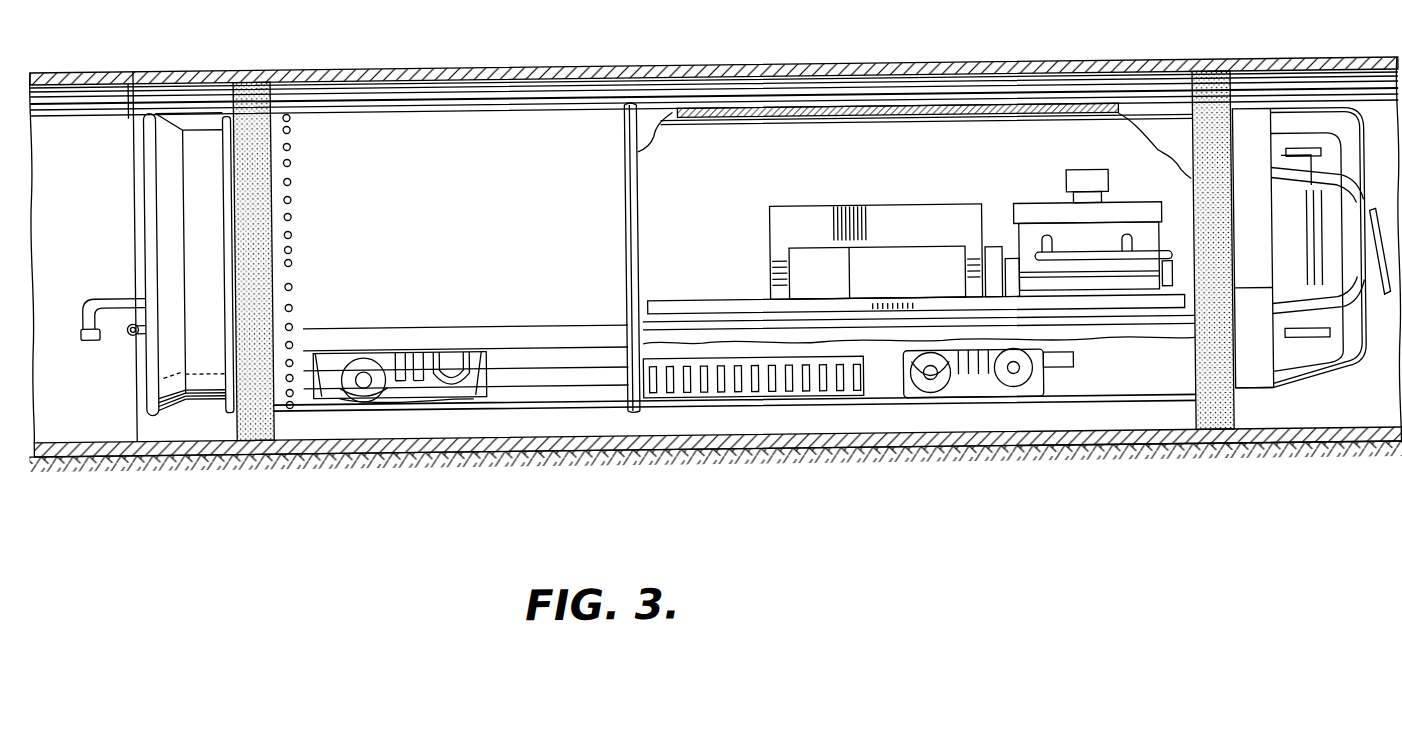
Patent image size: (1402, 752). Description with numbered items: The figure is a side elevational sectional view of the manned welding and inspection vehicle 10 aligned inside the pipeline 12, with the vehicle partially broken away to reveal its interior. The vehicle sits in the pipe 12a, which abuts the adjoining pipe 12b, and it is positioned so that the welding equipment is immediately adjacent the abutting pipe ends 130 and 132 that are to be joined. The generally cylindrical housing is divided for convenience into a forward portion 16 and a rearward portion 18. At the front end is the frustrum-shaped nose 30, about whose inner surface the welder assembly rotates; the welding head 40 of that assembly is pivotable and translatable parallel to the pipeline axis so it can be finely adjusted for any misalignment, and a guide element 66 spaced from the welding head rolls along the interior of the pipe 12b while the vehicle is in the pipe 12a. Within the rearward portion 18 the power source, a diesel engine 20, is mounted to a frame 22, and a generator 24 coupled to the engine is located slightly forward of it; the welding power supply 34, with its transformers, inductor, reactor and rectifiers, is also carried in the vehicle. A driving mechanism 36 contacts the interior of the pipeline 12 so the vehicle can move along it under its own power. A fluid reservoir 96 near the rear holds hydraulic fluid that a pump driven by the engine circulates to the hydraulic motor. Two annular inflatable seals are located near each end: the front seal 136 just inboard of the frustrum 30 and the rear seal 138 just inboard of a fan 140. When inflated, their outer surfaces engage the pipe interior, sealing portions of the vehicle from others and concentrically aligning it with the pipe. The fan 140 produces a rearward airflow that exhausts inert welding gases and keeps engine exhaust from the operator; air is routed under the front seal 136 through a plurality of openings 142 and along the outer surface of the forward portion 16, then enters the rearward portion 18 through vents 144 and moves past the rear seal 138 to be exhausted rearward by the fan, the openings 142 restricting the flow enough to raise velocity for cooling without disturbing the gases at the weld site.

The manned welding and inspection vehicle 10 is at (1286, 410).
The pipeline 12 is at (810, 82).
The pipe 12a is at (178, 459).
The pipe 12b is at (70, 458).
The forward portion 16 is at (515, 143).
The rearward portion 18 is at (985, 124).
The diesel engine 20 is at (1040, 218).
The frame 22 is at (1110, 316).
The generator 24 is at (893, 272).
The frustrum-shaped nose 30 is at (165, 137).
The welding power supply 34 is at (805, 225).
The driving mechanism 36 is at (360, 402).
The welding head 40 is at (126, 336).
The guide element 66 is at (98, 299).
The fluid reservoir 96 is at (1250, 140).
The abutting pipe end 130 is at (133, 84).
The abutting pipe end 132 is at (130, 88).
The front seal 136 is at (250, 103).
The rear seal 138 is at (1213, 85).
The fan 140 is at (1365, 268).
The openings 142 is at (290, 203).
The vents 144 is at (795, 394).